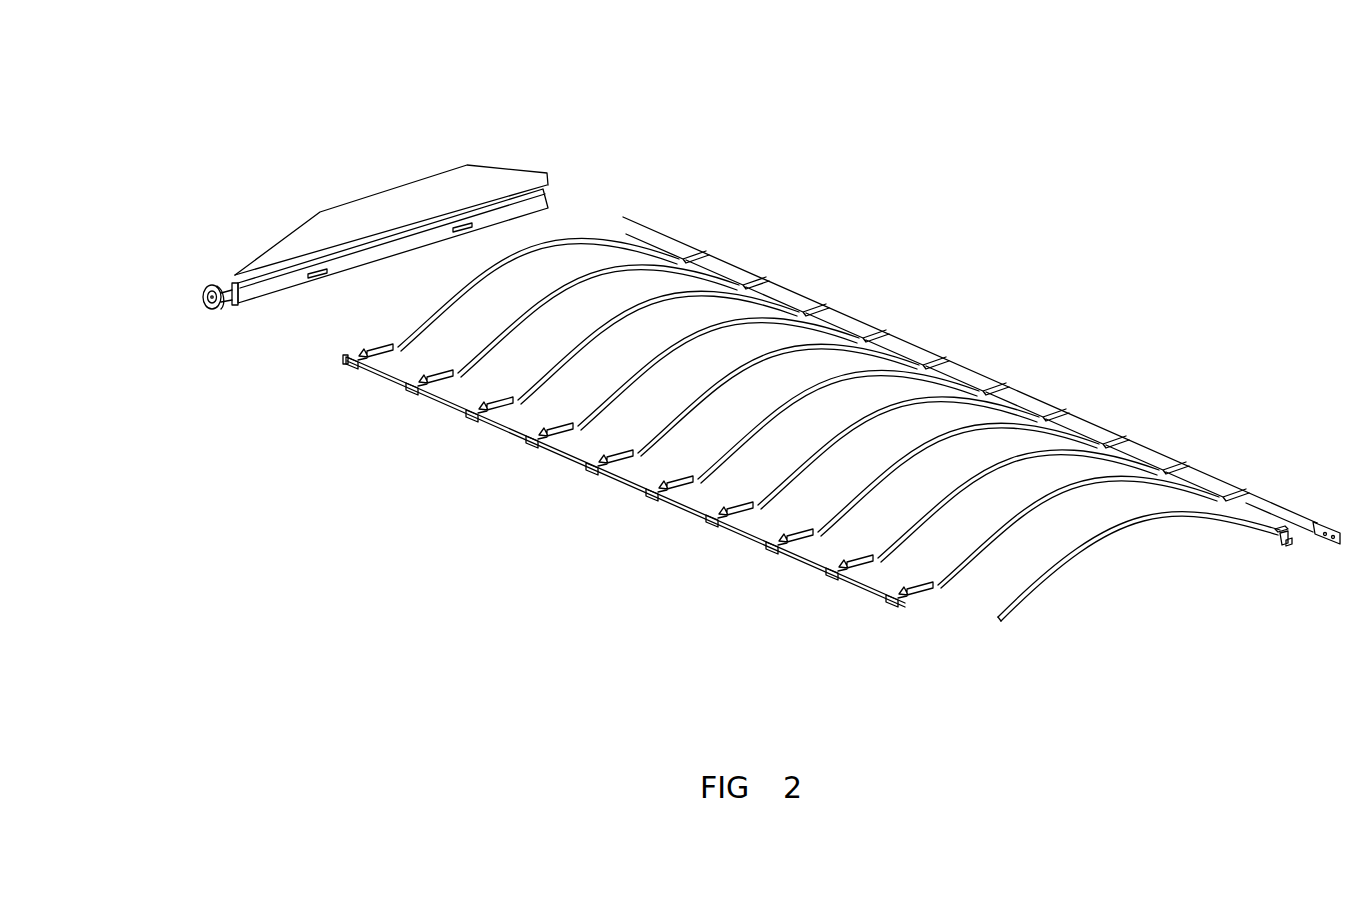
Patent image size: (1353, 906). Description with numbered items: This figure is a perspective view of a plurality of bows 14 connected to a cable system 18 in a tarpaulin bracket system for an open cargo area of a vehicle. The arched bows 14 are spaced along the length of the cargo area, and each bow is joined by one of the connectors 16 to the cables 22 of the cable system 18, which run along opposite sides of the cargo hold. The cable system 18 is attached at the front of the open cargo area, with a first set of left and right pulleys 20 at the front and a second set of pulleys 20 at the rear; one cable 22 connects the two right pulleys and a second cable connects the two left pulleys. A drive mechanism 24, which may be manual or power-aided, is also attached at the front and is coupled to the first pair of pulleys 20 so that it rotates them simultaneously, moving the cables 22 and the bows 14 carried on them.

The bows 14 is at (1123, 478).
The connectors 16 is at (912, 606).
The cable system 18 is at (477, 128).
The pulleys 20 is at (213, 310).
The cables 22 is at (905, 338).
The drive mechanism 24 is at (250, 218).